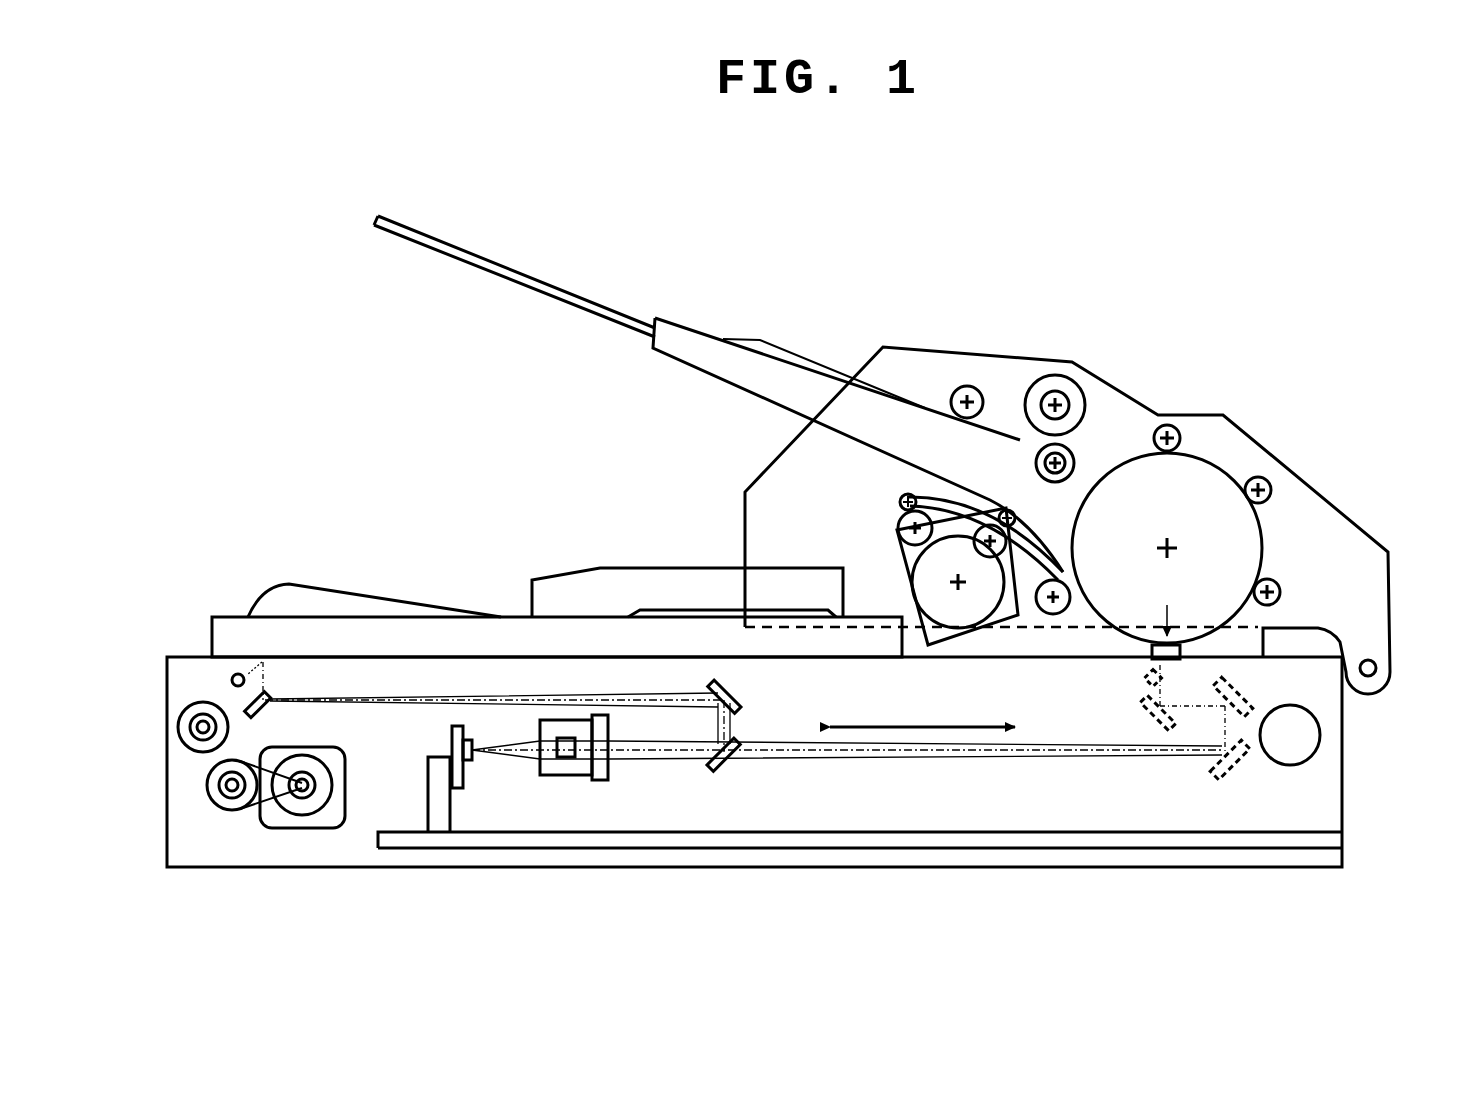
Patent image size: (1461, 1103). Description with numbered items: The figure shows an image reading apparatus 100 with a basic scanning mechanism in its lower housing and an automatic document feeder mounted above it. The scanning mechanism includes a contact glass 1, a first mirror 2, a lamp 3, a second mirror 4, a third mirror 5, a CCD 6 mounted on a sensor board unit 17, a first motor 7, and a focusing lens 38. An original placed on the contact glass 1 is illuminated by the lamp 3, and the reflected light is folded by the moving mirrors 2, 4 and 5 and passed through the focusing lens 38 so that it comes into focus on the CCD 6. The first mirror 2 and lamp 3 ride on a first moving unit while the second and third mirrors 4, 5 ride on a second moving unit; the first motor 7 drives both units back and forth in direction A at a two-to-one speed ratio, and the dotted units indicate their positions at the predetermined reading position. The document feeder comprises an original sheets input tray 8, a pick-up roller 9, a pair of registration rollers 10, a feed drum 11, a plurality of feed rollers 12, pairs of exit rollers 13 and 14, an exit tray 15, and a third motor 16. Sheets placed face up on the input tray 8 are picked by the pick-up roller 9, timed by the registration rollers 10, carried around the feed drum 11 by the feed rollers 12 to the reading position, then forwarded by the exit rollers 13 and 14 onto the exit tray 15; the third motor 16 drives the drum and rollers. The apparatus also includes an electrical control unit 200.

The image reading apparatus 100 is at (262, 210).
The electrical control unit 200 is at (498, 849).
The contact glass 1 is at (618, 661).
The first mirror 2 is at (275, 697).
The lamp 3 is at (223, 680).
The second mirror 4 is at (743, 692).
The third mirror 5 is at (733, 768).
The CCD 6 is at (472, 765).
The first motor 7 is at (298, 834).
The original sheets input tray 8 is at (581, 296).
The pick-up roller 9 is at (965, 384).
The pair of registration rollers 10 is at (1078, 449).
The feed drum 11 is at (1228, 603).
The feed rollers 12 is at (1270, 575).
The exit rollers 13 is at (1024, 523).
The exit rollers 14 is at (901, 524).
The exit tray 15 is at (595, 577).
The third motor 16 is at (926, 590).
The sensor board unit 17 is at (450, 746).
The focusing lens 38 is at (563, 783).